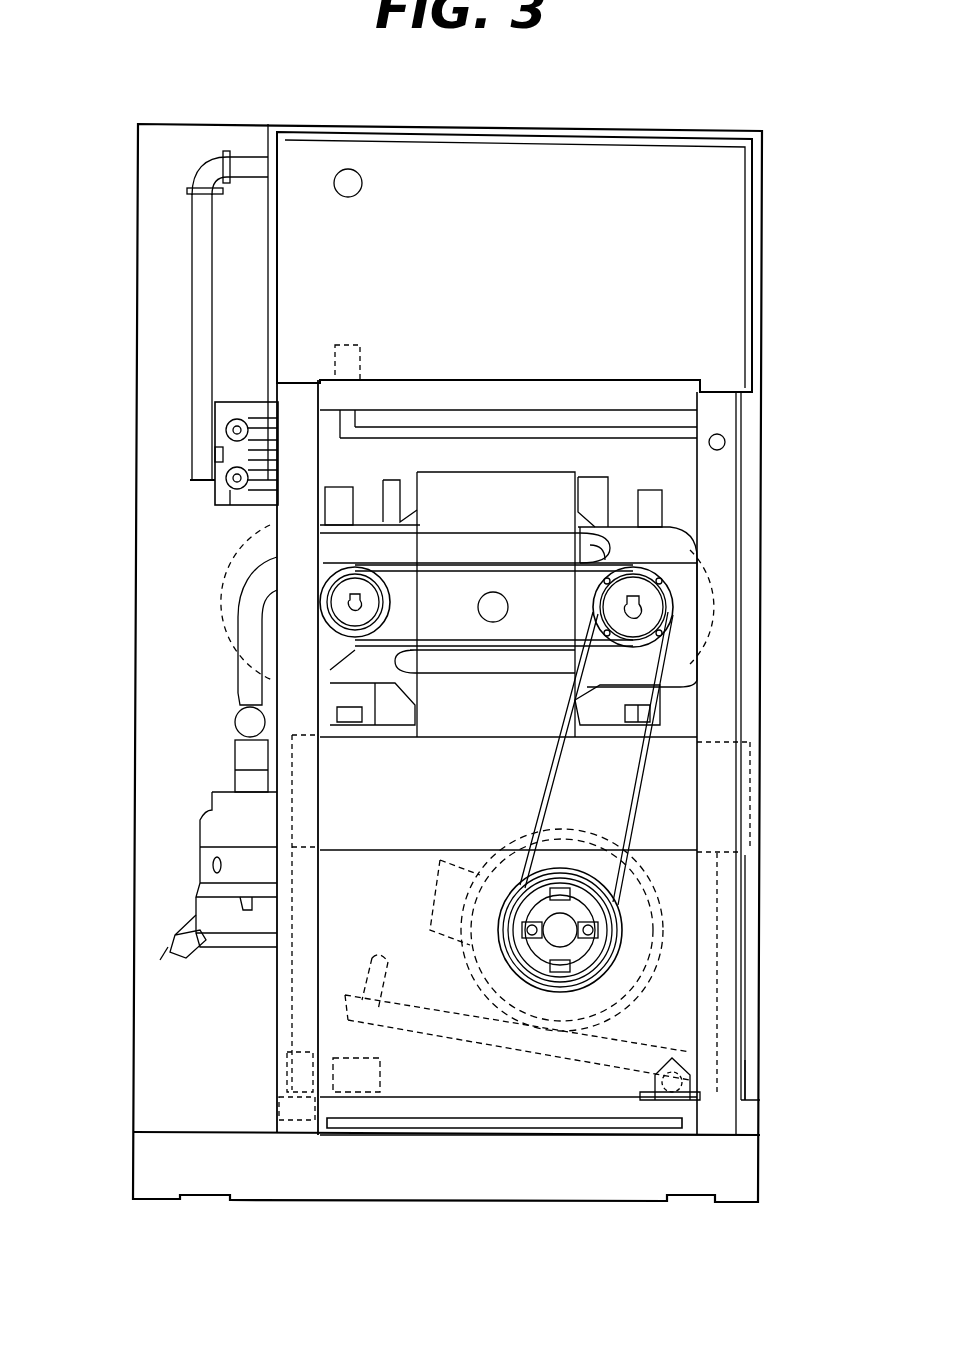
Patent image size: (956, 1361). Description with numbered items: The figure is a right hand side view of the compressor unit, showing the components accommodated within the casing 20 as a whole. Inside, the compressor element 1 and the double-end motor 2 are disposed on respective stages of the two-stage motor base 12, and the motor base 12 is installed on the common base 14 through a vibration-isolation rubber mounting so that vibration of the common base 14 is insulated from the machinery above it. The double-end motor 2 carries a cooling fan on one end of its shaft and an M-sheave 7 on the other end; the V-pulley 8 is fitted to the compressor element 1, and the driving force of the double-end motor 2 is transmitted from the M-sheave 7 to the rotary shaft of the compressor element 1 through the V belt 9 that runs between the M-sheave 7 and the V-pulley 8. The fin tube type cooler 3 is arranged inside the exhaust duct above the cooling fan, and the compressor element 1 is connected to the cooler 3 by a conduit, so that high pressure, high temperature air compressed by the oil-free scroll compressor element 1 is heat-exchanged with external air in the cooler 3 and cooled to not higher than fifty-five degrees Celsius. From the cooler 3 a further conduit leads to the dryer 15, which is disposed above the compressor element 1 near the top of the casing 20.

The compressor element 1 is at (678, 552).
The double-end motor 2 is at (638, 963).
The fin tube type cooler 3 is at (215, 505).
The M-sheave 7 is at (583, 917).
The V-pulley 8 is at (675, 605).
The belt 9 is at (648, 760).
The motor base 12 is at (553, 1112).
The common base 14 is at (440, 1178).
The dryer 15 is at (622, 150).
The casing 20 is at (765, 178).